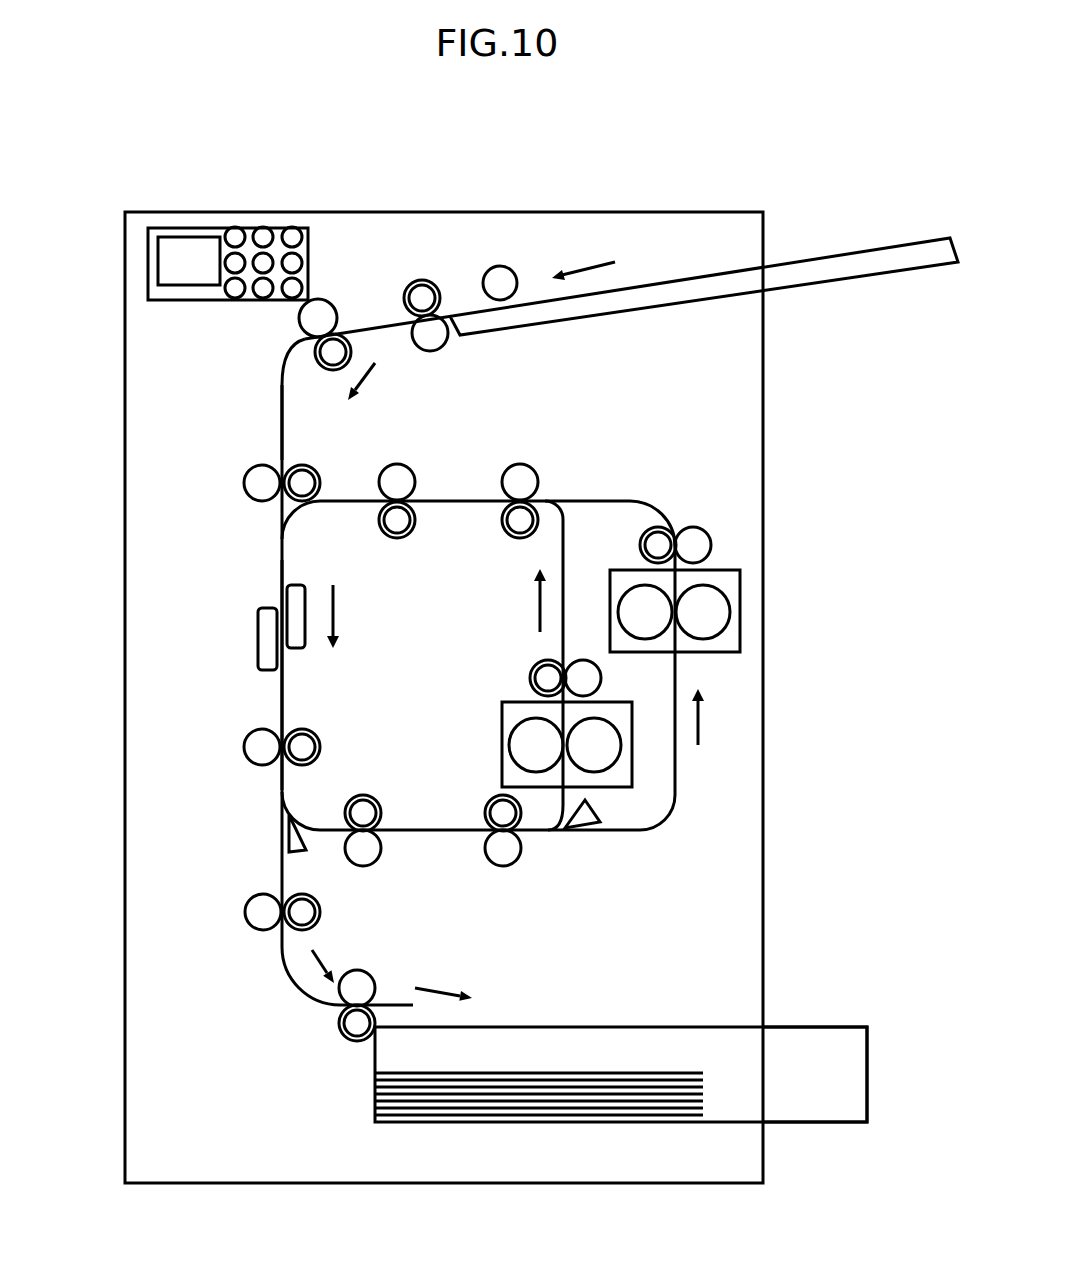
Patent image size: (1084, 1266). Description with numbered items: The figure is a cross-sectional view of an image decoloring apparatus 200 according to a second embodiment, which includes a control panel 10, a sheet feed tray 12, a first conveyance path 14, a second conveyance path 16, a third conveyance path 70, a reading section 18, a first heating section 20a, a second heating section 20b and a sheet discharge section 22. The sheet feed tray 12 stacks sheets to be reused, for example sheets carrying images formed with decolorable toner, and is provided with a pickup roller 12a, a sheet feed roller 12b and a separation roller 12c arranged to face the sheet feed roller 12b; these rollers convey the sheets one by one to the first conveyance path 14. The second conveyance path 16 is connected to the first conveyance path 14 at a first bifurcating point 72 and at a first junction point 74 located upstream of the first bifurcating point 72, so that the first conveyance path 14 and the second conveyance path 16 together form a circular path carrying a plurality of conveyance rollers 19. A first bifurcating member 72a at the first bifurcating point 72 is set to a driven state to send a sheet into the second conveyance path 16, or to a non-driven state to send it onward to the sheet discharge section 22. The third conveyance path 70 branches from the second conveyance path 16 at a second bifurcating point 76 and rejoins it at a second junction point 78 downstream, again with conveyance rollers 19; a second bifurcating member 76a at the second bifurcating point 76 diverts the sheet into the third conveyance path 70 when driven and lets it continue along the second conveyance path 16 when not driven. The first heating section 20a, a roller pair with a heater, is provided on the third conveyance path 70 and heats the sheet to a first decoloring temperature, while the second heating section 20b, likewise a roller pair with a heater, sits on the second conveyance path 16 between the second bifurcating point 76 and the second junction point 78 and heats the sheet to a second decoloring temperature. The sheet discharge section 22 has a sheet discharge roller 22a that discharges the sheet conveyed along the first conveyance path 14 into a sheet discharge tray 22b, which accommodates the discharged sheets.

The image decoloring apparatus 200 is at (300, 190).
The control panel 10 is at (148, 263).
The sheet feed tray 12 is at (882, 246).
The pickup roller 12a is at (503, 266).
The sheet feed roller 12b is at (428, 280).
The separation roller 12c is at (448, 343).
The first conveyance path 14 is at (290, 352).
The reading section 18 is at (212, 638).
The conveyance rollers 19 is at (327, 477).
The first junction point 74 is at (282, 533).
The first bifurcating point 72 is at (282, 790).
The first bifurcating member 72a is at (282, 830).
The second bifurcating point 76 is at (555, 835).
The second bifurcating member 76a is at (597, 836).
The third conveyance path 70 is at (640, 500).
The second junction point 78 is at (555, 500).
The second conveyance path 16 is at (680, 758).
The first heating section 20a is at (632, 770).
The second heating section 20b is at (742, 610).
The sheet discharge section 22 is at (711, 1045).
The sheet discharge roller 22a is at (343, 1032).
The sheet discharge tray 22b is at (868, 1066).